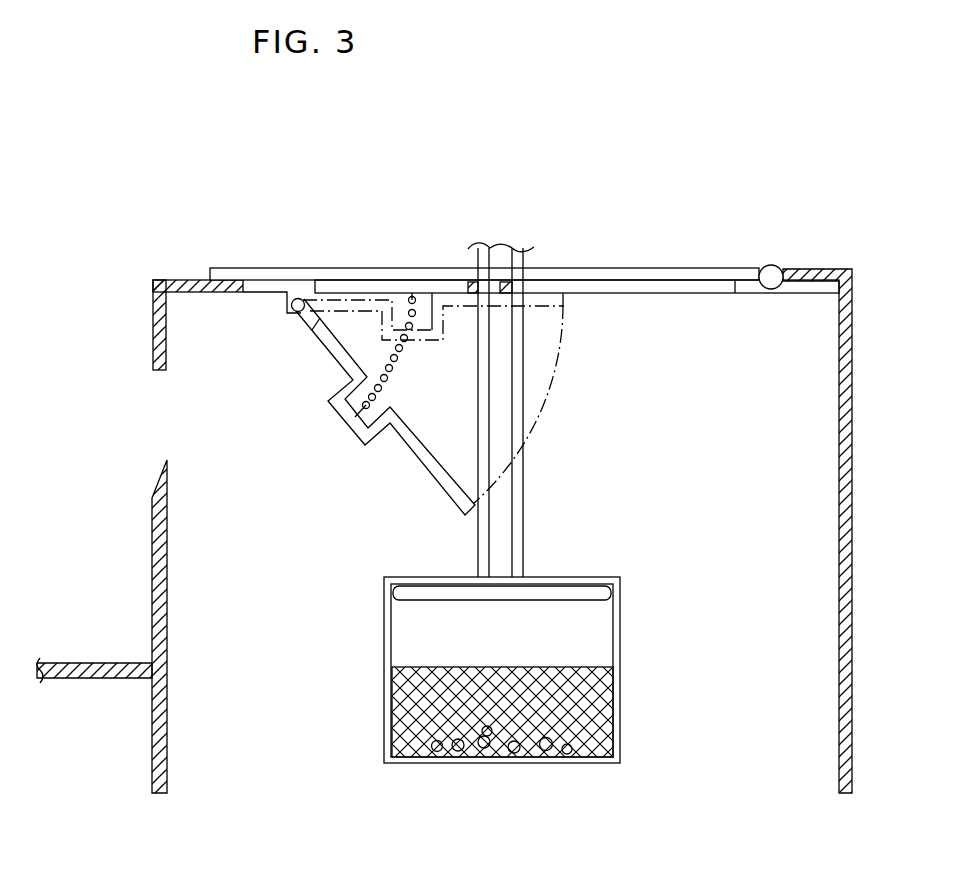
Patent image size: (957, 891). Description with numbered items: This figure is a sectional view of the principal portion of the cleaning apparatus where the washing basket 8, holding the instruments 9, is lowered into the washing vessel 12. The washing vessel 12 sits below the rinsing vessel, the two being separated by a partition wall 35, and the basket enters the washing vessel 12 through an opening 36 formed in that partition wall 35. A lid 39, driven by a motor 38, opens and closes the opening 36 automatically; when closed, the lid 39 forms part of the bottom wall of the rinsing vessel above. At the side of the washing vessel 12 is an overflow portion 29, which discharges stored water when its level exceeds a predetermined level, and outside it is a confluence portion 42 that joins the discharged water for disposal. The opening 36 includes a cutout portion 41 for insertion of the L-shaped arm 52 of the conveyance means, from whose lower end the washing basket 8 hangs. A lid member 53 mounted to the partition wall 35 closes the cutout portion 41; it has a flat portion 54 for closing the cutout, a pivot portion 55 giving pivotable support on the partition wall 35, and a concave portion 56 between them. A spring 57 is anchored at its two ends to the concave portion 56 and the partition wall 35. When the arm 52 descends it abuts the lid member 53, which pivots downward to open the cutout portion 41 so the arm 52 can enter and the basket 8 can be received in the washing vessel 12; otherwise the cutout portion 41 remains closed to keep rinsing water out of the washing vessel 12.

The washing basket 8 is at (620, 695).
The instruments 9 is at (517, 752).
The washing vessel 12 is at (168, 630).
The overflow portion 29 is at (180, 424).
The partition wall 35 is at (825, 287).
The opening 36 is at (688, 288).
The motor 38 is at (775, 265).
The lid 39 is at (287, 268).
The cutout portion 41 is at (475, 288).
The confluence portion 42 is at (90, 662).
The arm 52 is at (524, 521).
The lid member 53 is at (544, 323).
The flat portion 54 is at (505, 290).
The pivot portion 55 is at (288, 318).
The concave portion 56 is at (440, 343).
The spring 57 is at (416, 297).